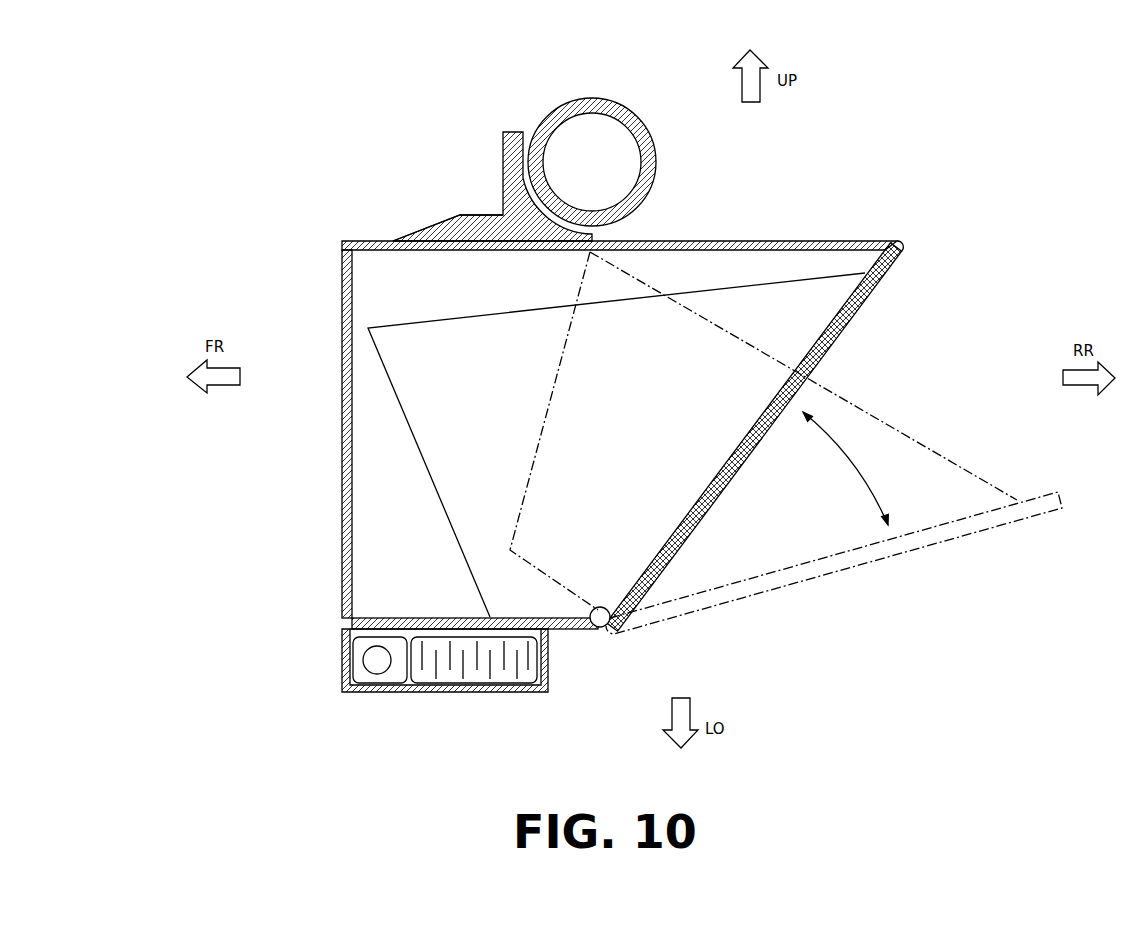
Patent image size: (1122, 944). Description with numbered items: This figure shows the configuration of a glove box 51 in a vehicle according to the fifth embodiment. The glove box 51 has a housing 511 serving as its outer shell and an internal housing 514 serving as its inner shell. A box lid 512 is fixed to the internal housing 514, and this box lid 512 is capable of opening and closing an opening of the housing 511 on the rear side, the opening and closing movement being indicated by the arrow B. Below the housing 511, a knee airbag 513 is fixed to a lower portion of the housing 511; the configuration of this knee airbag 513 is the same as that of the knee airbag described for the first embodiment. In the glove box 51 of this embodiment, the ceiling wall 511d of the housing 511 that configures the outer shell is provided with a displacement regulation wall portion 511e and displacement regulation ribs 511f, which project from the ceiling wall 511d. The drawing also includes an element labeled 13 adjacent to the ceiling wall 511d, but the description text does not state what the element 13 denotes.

The pipe 13 is at (637, 118).
The glove box 51 is at (893, 238).
The housing 511 is at (342, 296).
The ceiling wall 511d is at (682, 240).
The displacement regulation wall portion 511e is at (502, 182).
The displacement regulation ribs 511f is at (477, 213).
The box lid 512 is at (857, 322).
The knee airbag 513 is at (342, 656).
The internal housing 514 is at (782, 283).
The arrow B is at (845, 468).